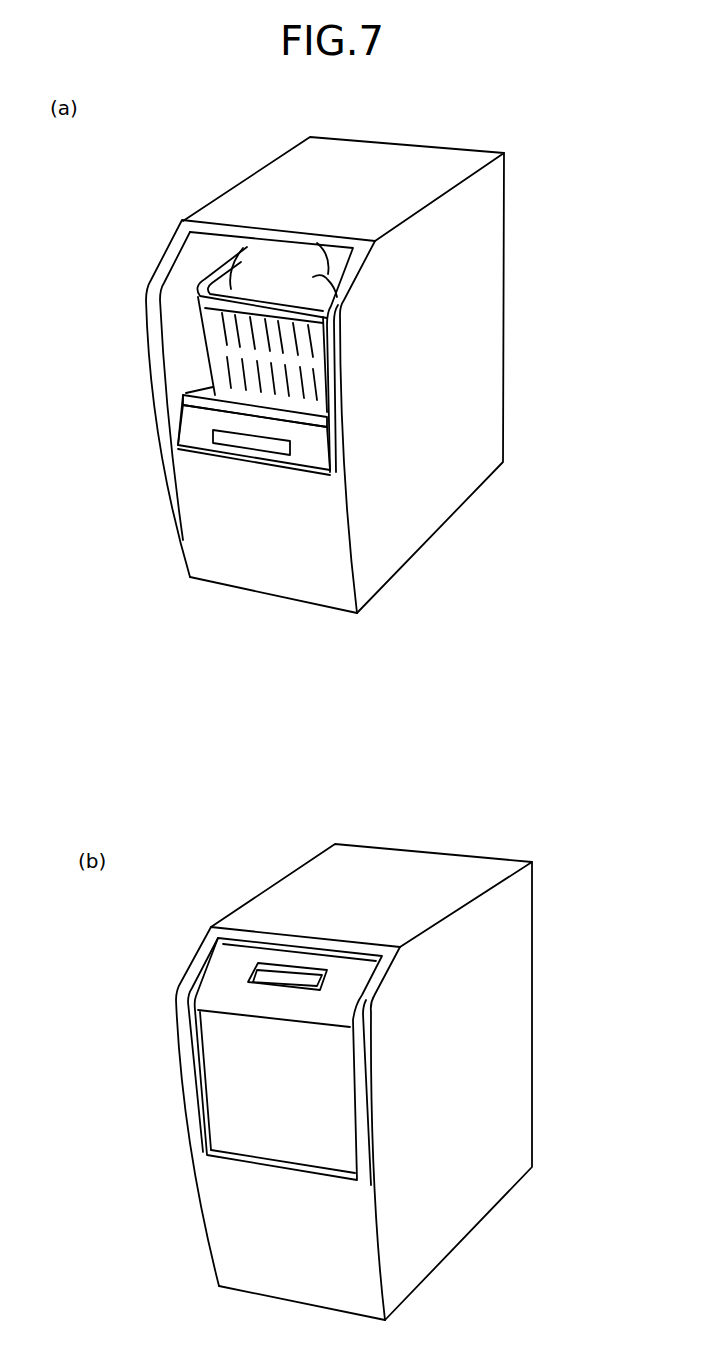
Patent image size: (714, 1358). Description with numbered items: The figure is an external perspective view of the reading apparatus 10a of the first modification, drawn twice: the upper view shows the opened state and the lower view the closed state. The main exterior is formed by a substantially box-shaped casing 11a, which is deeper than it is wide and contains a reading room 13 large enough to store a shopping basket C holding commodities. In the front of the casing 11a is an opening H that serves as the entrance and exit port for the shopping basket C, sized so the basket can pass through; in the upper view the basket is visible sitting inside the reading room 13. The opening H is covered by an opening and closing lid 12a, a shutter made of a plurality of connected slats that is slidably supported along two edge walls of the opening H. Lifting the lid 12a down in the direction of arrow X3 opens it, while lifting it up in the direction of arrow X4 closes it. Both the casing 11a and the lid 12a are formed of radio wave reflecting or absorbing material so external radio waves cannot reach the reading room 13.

The reading apparatus 10a is at (546, 174).
The casing 11a is at (432, 518).
The opening and closing lid 12a is at (197, 418).
The reading room 13 is at (184, 282).
The shopping basket C is at (258, 323).
The opening H is at (182, 369).
The arrow X3 is at (127, 233).
The arrow X4 is at (163, 931).